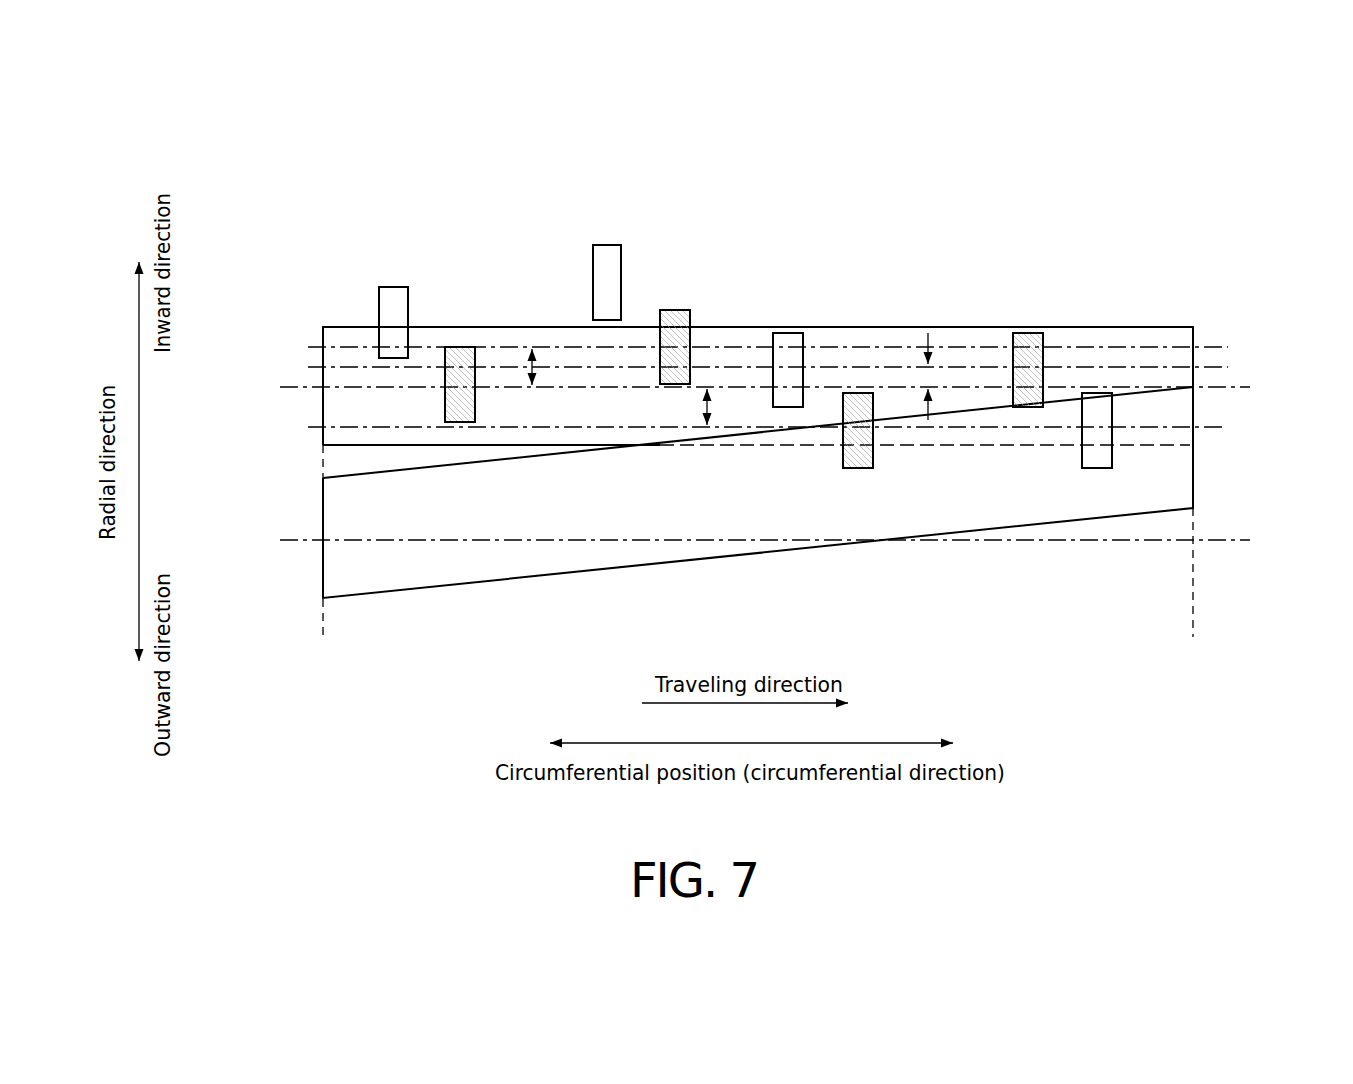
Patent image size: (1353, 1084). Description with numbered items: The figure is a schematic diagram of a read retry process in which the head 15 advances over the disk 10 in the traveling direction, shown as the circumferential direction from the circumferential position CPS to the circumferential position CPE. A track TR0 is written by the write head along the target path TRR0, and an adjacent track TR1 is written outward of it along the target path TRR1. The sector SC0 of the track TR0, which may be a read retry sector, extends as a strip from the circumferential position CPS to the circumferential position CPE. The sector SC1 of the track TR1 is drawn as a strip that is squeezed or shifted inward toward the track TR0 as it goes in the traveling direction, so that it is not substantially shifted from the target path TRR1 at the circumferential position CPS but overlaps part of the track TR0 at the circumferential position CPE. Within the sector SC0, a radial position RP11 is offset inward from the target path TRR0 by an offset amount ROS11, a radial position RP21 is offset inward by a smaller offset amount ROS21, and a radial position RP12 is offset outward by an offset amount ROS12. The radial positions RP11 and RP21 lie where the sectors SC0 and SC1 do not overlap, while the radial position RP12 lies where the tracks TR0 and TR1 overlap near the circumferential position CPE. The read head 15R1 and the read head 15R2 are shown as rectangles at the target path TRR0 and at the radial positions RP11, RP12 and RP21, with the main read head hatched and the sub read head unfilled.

The disk 10 is at (1172, 158).
The head 15 is at (440, 210).
The read head 15R1 is at (461, 350).
The read head 15R2 is at (393, 292).
The offset amount ROS11 is at (538, 365).
The offset amount ROS12 is at (712, 412).
The offset amount ROS21 is at (935, 378).
The radial position RP11 is at (1138, 347).
The radial position RP12 is at (1133, 428).
The radial position RP21 is at (1183, 367).
The sector SC0 is at (1206, 332).
The sector SC1 is at (1205, 477).
The target path TRR0 is at (298, 383).
The track TR0 is at (739, 386).
The target path TRR1 is at (298, 537).
The track TR1 is at (739, 543).
The circumferential position CPS is at (322, 556).
The circumferential position CPE is at (1188, 589).